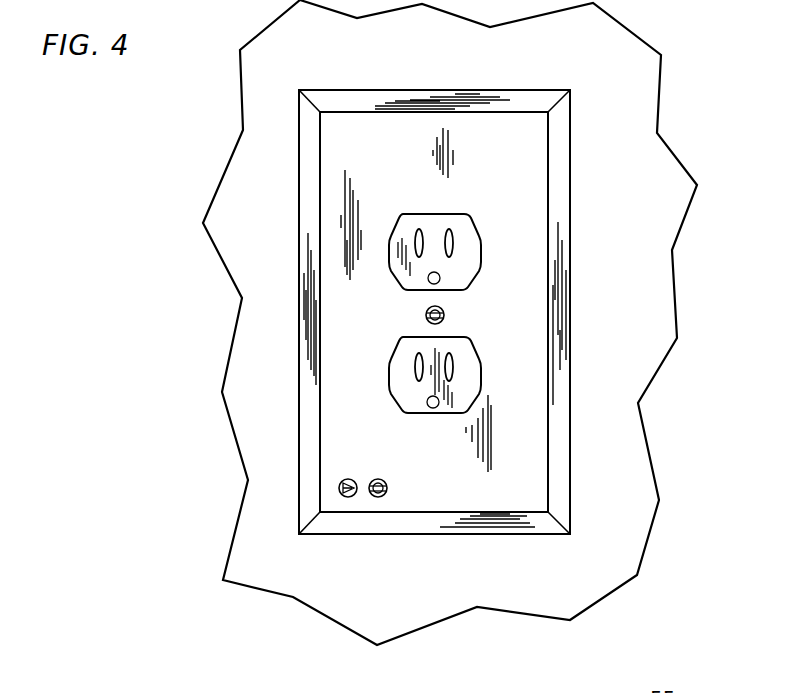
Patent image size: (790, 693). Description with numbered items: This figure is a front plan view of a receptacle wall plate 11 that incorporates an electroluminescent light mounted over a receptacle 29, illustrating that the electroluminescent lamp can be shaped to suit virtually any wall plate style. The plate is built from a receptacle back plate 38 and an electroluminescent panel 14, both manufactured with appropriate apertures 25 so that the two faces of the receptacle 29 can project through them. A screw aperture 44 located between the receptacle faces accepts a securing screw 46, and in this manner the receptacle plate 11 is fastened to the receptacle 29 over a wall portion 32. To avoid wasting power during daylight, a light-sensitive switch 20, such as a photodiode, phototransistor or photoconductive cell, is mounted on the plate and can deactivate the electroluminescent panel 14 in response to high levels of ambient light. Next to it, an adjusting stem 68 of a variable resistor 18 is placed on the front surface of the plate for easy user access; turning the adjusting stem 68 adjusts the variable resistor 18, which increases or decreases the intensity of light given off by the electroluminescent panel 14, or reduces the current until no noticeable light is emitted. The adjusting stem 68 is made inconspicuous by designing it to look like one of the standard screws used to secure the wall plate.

The receptacle wall plate 11 is at (391, 68).
The electroluminescent panel 14 is at (532, 449).
The variable resistor 18 is at (381, 497).
The light-sensitive switch 20 is at (350, 497).
The apertures 25 is at (450, 243).
The receptacle 29 is at (466, 212).
The wall portion 32 is at (668, 177).
The receptacle back plate 38 is at (299, 222).
The screw aperture 44 is at (445, 313).
The securing screw 46 is at (427, 318).
The adjusting stem 68 is at (380, 479).